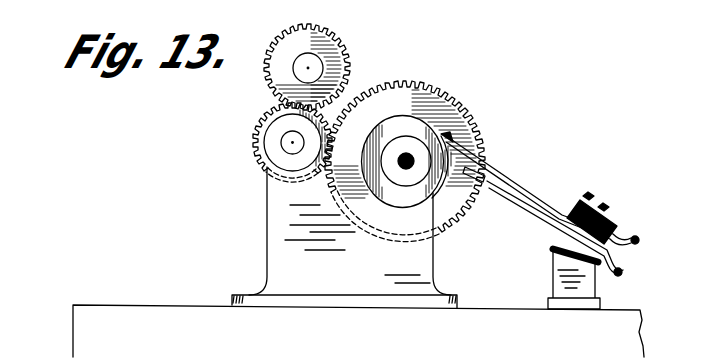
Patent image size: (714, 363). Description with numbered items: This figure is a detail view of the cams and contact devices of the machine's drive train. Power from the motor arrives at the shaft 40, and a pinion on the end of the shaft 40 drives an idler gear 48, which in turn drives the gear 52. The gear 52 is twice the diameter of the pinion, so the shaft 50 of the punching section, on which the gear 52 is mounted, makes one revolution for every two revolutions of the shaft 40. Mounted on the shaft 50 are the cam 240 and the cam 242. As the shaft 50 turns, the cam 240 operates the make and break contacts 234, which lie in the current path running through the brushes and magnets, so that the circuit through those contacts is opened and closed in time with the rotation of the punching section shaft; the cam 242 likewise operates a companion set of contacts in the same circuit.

The shaft 40 is at (331, 36).
The idler gear 48 is at (252, 147).
The shaft 50 is at (403, 152).
The gear 52 is at (473, 123).
The make and break contacts 234 is at (497, 172).
The cam 240 is at (404, 196).
The cam 242 is at (440, 195).